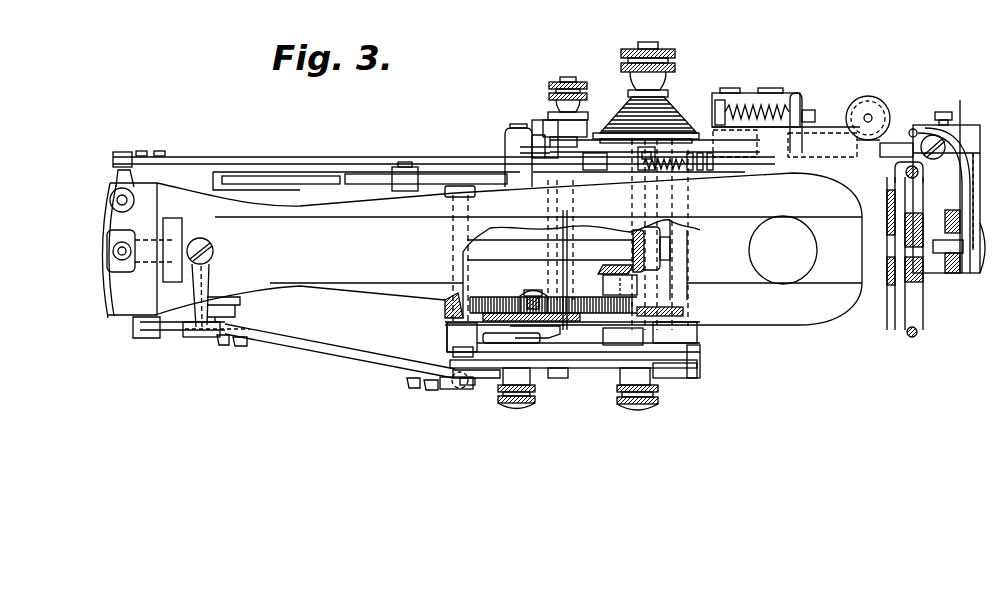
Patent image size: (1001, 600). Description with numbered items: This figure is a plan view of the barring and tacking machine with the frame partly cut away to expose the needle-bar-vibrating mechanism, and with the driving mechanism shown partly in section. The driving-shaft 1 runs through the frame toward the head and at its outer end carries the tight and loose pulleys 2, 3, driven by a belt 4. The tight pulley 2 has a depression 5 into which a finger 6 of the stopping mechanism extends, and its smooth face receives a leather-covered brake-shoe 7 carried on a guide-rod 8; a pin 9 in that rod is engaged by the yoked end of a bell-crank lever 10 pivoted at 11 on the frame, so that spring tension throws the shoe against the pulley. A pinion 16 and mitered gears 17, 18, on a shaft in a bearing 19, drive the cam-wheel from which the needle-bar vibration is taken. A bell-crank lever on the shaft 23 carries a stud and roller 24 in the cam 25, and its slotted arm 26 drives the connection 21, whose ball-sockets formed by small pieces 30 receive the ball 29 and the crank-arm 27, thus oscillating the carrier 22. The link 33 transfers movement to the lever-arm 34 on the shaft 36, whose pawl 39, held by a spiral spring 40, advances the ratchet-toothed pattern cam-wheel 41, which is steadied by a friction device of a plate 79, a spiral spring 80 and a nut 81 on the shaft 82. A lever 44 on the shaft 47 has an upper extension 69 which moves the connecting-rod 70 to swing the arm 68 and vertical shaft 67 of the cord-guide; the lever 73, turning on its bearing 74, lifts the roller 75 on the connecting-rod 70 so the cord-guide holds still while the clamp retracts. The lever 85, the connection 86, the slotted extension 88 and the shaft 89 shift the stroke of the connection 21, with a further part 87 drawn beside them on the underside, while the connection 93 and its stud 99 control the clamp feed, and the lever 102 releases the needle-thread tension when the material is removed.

The driving-shaft 1 is at (485, 250).
The tight pulley 2 is at (921, 304).
The loose pulley 3 is at (886, 310).
The belt 4 is at (920, 172).
The depression 5 is at (930, 250).
The finger 6 is at (945, 245).
The brake-shoe 7 is at (946, 206).
The guide-rod 8 is at (896, 142).
The pin 9 is at (801, 108).
The bell-crank lever 10 is at (813, 116).
The pivot 11 is at (780, 92).
The pinion 16 is at (604, 282).
The miter-gear 17 is at (604, 269).
The miter-gear 18 is at (636, 237).
The bearing 19 is at (621, 286).
The connection 21 is at (348, 358).
The carrier 22 is at (112, 262).
The shaft 23 is at (460, 238).
The stud and roller 24 is at (530, 295).
The cam 25 is at (502, 300).
The arm 26 is at (455, 349).
The crank-arm 27 is at (180, 247).
The ball 29 is at (204, 334).
The small pieces 30 is at (228, 340).
The link 33 is at (521, 339).
The lever-arm 34 is at (622, 338).
The shaft 36 is at (660, 268).
The pawl 39 is at (641, 178).
The spiral spring 40 is at (688, 176).
The ratchet-toothed wheel 41 is at (612, 178).
The lever 44 is at (585, 125).
The shaft 47 is at (569, 78).
The vertical shaft 67 is at (108, 199).
The arm 68 is at (118, 175).
The extension 69 is at (545, 142).
The connecting-rod 70 is at (346, 158).
The lever 73 is at (442, 174).
The bearing 74 is at (510, 148).
The roller 75 is at (396, 180).
The plate 79 is at (697, 133).
The spiral spring 80 is at (672, 113).
The nut 81 is at (674, 58).
The shaft 82 is at (657, 42).
The lever 85 is at (565, 368).
The connection 86 is at (690, 374).
The knob 87 is at (642, 403).
The slotted extension 88 is at (700, 355).
The shaft 89 is at (700, 334).
The connection 93 is at (507, 374).
The stud 99 is at (512, 400).
The lever 102 is at (296, 175).